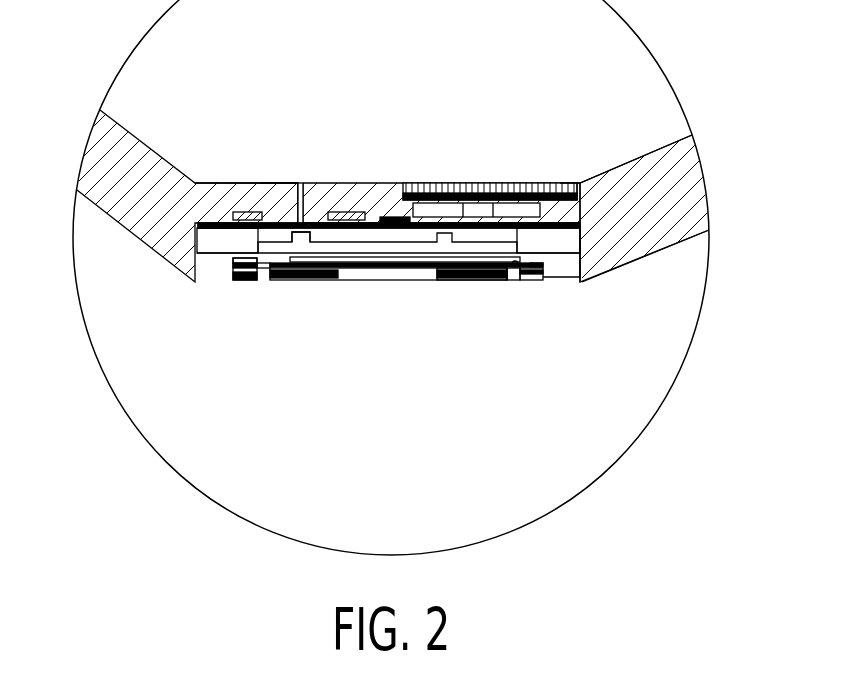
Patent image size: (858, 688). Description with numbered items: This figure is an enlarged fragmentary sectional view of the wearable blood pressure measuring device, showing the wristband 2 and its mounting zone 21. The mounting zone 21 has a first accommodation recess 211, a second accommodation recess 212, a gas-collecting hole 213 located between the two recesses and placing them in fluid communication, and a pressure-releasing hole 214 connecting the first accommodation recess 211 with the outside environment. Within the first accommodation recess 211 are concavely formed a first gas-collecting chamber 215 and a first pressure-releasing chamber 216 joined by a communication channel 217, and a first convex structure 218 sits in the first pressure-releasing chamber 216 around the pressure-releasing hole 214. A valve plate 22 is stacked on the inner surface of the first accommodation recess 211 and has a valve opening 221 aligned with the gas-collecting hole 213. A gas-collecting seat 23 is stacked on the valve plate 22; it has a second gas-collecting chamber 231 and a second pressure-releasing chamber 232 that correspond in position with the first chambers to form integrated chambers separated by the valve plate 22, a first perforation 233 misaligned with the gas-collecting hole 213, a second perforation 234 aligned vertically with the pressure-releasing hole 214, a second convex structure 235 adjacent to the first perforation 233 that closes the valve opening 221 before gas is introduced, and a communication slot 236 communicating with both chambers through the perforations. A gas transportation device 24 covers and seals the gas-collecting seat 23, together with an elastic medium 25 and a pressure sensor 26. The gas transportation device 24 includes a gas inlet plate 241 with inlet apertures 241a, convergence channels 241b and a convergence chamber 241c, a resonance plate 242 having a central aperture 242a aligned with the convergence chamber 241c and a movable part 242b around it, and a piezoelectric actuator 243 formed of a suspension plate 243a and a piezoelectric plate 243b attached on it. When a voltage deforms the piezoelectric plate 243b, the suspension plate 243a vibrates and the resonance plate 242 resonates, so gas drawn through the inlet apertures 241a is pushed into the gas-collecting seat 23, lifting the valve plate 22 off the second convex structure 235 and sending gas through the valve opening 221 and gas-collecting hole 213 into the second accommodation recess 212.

The wristband 2 is at (692, 180).
The mounting zone 21 is at (585, 262).
The valve plate 22 is at (222, 190).
The gas-collecting seat 23 is at (208, 256).
The gas transportation device 24 is at (240, 283).
The elastic medium 25 is at (445, 205).
The pressure sensor 26 is at (505, 183).
The first accommodation recess 211 is at (545, 268).
The second accommodation recess 212 is at (588, 185).
The gas-collecting hole 213 is at (520, 205).
The pressure-releasing hole 214 is at (300, 185).
The first gas-collecting chamber 215 is at (570, 185).
The first pressure-releasing chamber 216 is at (250, 212).
The communication channel 217 is at (345, 212).
The first convex structure 218 is at (330, 183).
The valve opening 221 is at (512, 268).
The second gas-collecting chamber 231 is at (520, 262).
The second pressure-releasing chamber 232 is at (338, 244).
The first perforation 233 is at (475, 280).
The second perforation 234 is at (300, 244).
The second convex structure 235 is at (530, 278).
The communication slot 236 is at (490, 278).
The gas inlet plate 241 is at (395, 282).
The inlet aperture 241a is at (252, 282).
The convergence channel 241b is at (283, 280).
The convergence chamber 241c is at (368, 280).
The resonance plate 242 is at (268, 268).
The central aperture 242a is at (385, 280).
The movable part 242b is at (405, 262).
The piezoelectric actuator 243 is at (582, 258).
The suspension plate 243a is at (225, 229).
The piezoelectric plate 243b is at (395, 217).